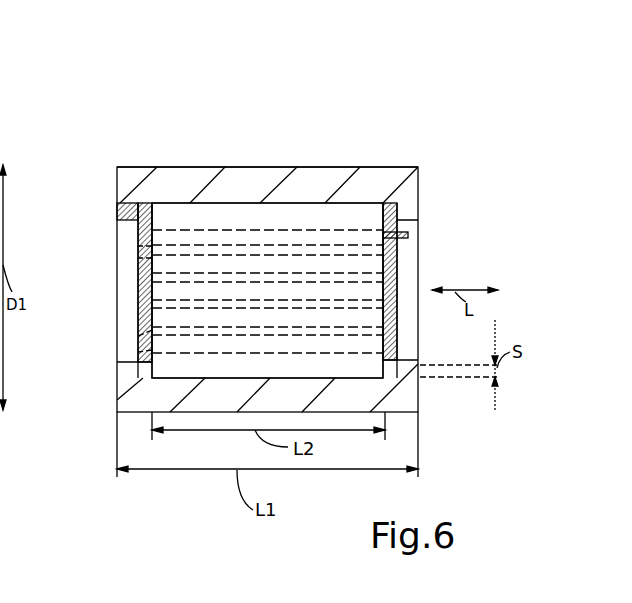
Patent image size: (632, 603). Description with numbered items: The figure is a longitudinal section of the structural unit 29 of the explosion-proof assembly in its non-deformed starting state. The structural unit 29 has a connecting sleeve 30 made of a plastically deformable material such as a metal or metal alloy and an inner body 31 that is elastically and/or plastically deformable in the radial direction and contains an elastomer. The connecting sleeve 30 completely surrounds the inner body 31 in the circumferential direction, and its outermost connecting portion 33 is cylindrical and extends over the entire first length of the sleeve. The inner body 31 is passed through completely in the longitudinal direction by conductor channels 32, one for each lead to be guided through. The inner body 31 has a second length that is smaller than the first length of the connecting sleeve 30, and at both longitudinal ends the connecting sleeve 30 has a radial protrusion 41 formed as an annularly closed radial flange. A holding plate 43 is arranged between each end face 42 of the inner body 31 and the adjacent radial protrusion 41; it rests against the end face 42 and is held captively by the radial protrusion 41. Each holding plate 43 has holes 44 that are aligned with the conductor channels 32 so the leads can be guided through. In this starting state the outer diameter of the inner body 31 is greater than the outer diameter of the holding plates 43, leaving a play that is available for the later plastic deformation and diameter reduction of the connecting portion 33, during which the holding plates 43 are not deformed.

The structural unit 29 is at (434, 135).
The connecting sleeve 30 is at (270, 172).
The inner body 31 is at (292, 215).
The conductor channel 32 is at (152, 258).
The connecting portion 33 is at (200, 167).
The radial protrusion 41 is at (127, 370).
The end face 42 is at (122, 210).
The holding plate 43 is at (120, 212).
The hole 44 is at (150, 308).